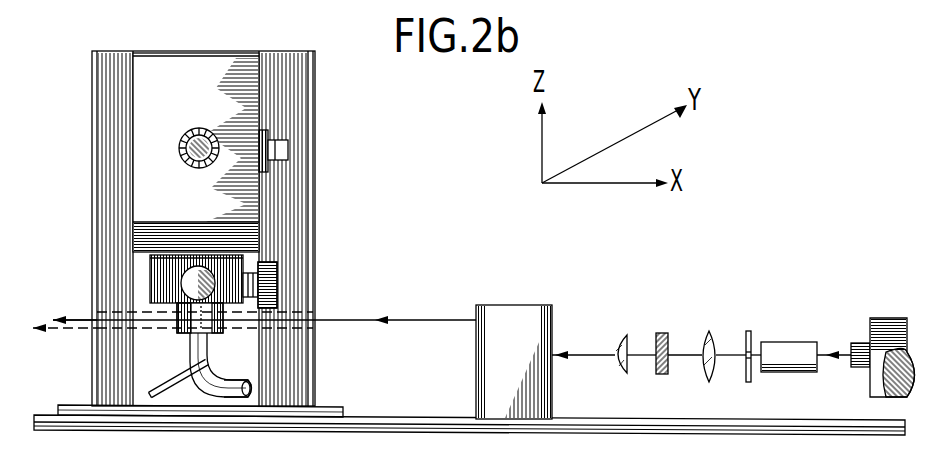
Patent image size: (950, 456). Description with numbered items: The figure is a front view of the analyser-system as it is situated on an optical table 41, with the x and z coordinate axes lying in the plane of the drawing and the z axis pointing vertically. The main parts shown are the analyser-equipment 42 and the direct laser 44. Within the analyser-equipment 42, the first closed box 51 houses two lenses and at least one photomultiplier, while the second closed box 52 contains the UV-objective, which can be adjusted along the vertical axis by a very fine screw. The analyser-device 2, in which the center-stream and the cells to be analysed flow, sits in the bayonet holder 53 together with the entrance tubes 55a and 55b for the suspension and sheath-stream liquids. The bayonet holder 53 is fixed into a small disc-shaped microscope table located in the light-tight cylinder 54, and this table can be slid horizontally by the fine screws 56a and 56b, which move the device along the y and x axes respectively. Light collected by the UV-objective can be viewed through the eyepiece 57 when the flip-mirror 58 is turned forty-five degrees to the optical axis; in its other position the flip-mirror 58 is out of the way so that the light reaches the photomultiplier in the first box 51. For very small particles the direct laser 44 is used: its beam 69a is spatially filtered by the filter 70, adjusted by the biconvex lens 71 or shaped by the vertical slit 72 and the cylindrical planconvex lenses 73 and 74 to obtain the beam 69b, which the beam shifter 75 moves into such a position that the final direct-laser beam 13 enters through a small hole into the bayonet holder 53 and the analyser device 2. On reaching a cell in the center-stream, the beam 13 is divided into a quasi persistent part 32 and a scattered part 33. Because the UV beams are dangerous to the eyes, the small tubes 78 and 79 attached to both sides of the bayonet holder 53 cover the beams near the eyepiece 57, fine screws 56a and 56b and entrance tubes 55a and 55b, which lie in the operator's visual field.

The analyser-device 2 is at (220, 336).
The final direct-laser beam 13 is at (400, 318).
The quasi persistent part of the beam 32 is at (77, 316).
The scattered part of the beam 33 is at (67, 332).
The optical table 41 is at (423, 428).
The analyser-equipment 42 is at (331, 412).
The direct laser 44 is at (888, 330).
The first closed box 51 is at (302, 73).
The second closed box 52 is at (245, 72).
The bayonet holder 53 is at (177, 333).
The light-tight cylinder 54 is at (158, 262).
The entrance tube 55a is at (163, 386).
The entrance tube 55b is at (252, 384).
The fine screw 56a is at (277, 275).
The fine screw 56b is at (197, 275).
The eyepiece 57 is at (193, 133).
The flip-mirror 58 is at (287, 147).
The beam of the direct laser 69a is at (840, 360).
The shaped beam 69b is at (575, 360).
The filter 70 is at (782, 350).
The biconvex lens 71 is at (705, 350).
The vertical slit 72 is at (748, 370).
The cylindrical planconvex lens 73 is at (662, 365).
The cylindrical planconvex lens 74 is at (623, 335).
The beam shifter 75 is at (492, 325).
The small tube 78 is at (297, 311).
The small tube 79 is at (112, 312).